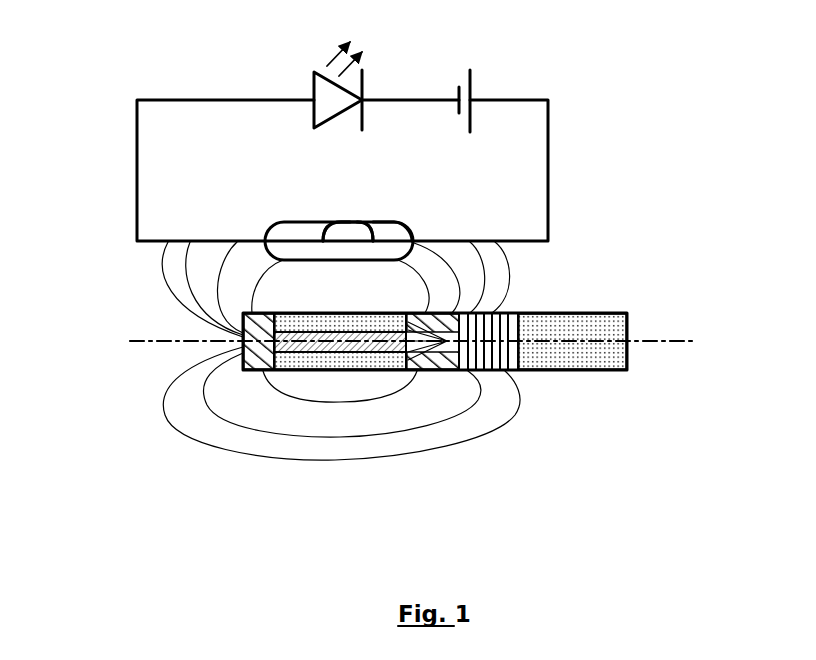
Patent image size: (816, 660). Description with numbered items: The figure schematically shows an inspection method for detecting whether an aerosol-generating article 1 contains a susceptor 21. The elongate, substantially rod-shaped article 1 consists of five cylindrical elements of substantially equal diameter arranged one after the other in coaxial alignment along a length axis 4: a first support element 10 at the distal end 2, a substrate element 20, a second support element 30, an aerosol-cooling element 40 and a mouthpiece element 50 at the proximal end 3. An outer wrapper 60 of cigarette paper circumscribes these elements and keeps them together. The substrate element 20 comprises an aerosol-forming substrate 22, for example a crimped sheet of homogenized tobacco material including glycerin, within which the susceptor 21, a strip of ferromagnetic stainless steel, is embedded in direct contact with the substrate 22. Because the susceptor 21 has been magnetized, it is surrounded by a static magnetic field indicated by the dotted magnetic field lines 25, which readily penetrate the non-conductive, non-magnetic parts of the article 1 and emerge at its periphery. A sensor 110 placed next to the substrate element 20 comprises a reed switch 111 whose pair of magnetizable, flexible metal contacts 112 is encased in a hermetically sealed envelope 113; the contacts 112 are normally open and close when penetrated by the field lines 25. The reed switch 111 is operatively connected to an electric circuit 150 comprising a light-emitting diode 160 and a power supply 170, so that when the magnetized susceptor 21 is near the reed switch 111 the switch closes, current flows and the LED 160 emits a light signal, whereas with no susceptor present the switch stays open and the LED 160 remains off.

The aerosol-generating article 1 is at (661, 440).
The distal end 2 is at (243, 389).
The proximal end 3 is at (450, 400).
The length axis 4 is at (681, 342).
The first support element 10 is at (258, 376).
The substrate element 20 is at (358, 430).
The susceptor 21 is at (309, 346).
The aerosol-forming substrate 22 is at (347, 353).
The magnetic field lines 25 is at (157, 268).
The second support element 30 is at (433, 376).
The aerosol-cooling element 40 is at (497, 376).
The mouthpiece element 50 is at (573, 376).
The outer wrapper 60 is at (563, 310).
The sensor 110 is at (288, 221).
The reed switch 111 is at (288, 221).
The metal contacts 112 is at (341, 222).
The hermetically sealed envelope 113 is at (395, 222).
The electric circuit 150 is at (135, 97).
The light-emitting diode 160 is at (300, 60).
The power supply 170 is at (473, 64).